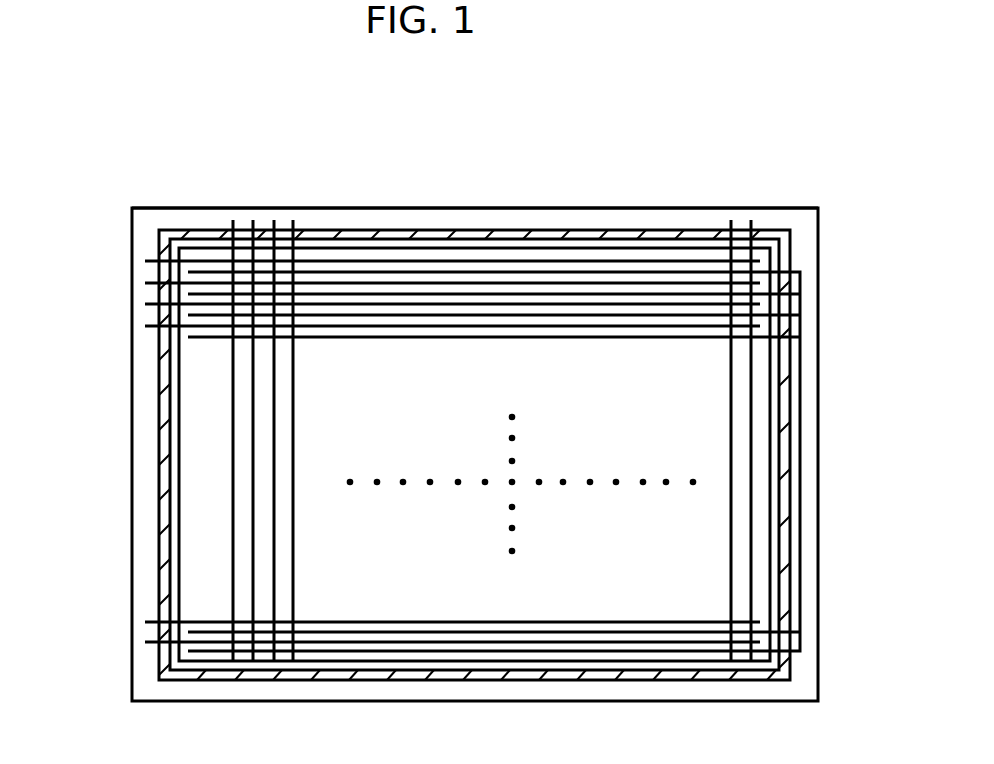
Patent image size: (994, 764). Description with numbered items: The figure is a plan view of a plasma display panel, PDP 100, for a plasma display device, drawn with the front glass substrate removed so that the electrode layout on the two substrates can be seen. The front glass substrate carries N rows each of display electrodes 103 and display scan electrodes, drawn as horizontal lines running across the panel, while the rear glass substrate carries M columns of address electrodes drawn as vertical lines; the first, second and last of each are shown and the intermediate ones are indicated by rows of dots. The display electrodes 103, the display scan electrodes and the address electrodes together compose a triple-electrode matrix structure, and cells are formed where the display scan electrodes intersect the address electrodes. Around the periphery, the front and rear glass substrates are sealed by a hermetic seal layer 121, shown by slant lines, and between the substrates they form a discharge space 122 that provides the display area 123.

The PDP 100 is at (818, 480).
The display electrodes 103 is at (195, 337).
The hermetic seal layer 121 is at (462, 235).
The discharge space 122 is at (562, 368).
The display area 123 is at (178, 468).